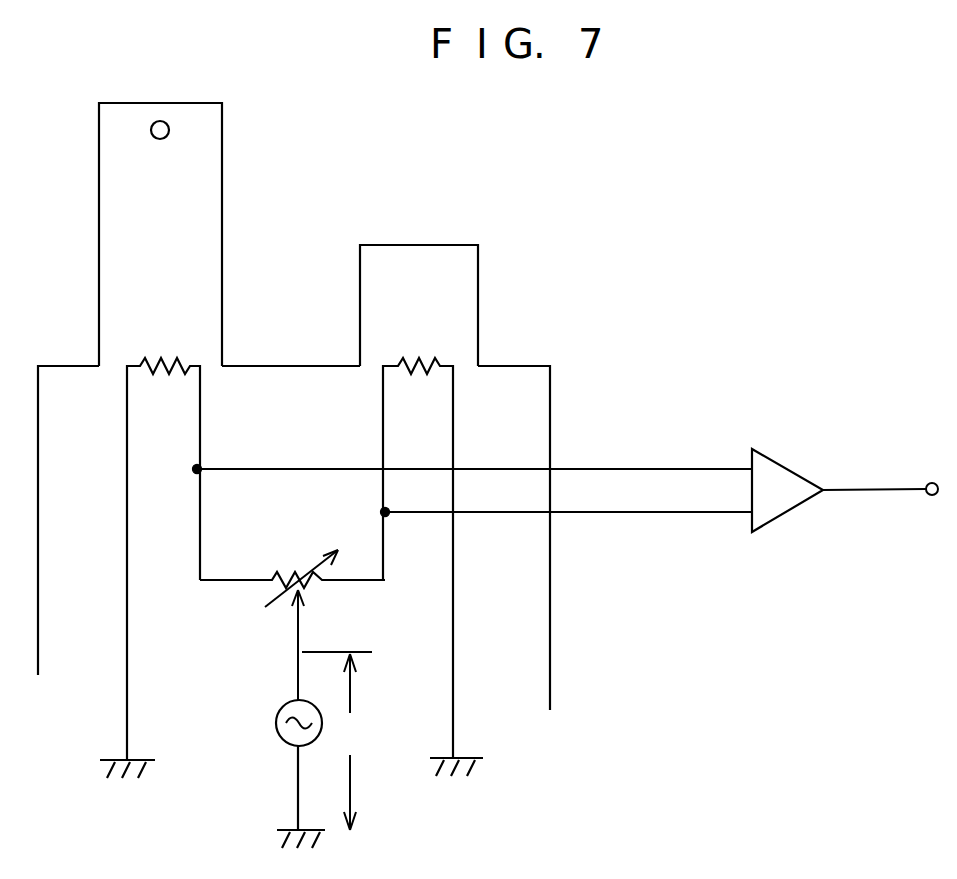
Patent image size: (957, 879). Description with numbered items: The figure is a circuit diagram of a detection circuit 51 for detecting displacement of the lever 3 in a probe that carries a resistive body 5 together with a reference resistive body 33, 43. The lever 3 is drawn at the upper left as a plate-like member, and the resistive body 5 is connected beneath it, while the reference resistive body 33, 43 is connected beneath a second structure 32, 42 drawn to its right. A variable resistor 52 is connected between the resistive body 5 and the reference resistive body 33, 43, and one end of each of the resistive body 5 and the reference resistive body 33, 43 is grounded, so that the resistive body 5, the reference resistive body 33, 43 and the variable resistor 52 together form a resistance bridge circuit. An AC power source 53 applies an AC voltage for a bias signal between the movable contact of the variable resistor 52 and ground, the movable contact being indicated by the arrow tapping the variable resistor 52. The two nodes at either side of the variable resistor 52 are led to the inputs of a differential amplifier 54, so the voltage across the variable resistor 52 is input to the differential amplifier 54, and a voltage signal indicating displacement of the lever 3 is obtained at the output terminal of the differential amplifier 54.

The lever 3 is at (205, 138).
The resistive body 5 is at (163, 353).
The electrode 32 is at (481, 305).
The electrode 42 is at (455, 273).
The reference resistive body 33 is at (494, 535).
The resistor 43 is at (413, 348).
The detection circuit 51 is at (747, 100).
The variable resistor 52 is at (297, 570).
The AC power source 53 is at (277, 727).
The differential amplifier 54 is at (782, 463).